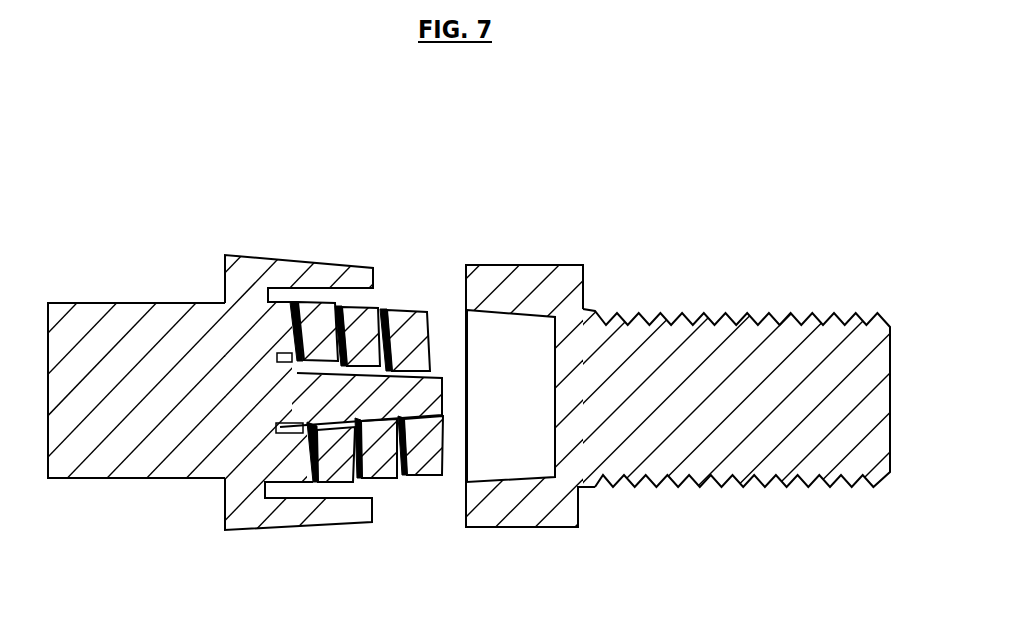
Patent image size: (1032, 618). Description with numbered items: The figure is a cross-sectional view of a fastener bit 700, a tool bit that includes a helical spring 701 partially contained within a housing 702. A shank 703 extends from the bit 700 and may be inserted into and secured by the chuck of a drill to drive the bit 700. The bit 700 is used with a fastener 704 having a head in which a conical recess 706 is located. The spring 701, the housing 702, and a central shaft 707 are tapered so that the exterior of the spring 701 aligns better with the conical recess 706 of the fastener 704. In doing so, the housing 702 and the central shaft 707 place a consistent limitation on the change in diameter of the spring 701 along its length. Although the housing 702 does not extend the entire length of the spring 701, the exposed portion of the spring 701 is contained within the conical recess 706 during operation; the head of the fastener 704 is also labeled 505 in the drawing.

The fastener bit 700 is at (140, 200).
The helical spring 701 is at (427, 476).
The housing 702 is at (305, 527).
The shank 703 is at (145, 478).
The fastener 704 is at (812, 245).
The nut head 505 is at (520, 527).
The conical recess 706 is at (536, 332).
The central shaft 707 is at (442, 377).